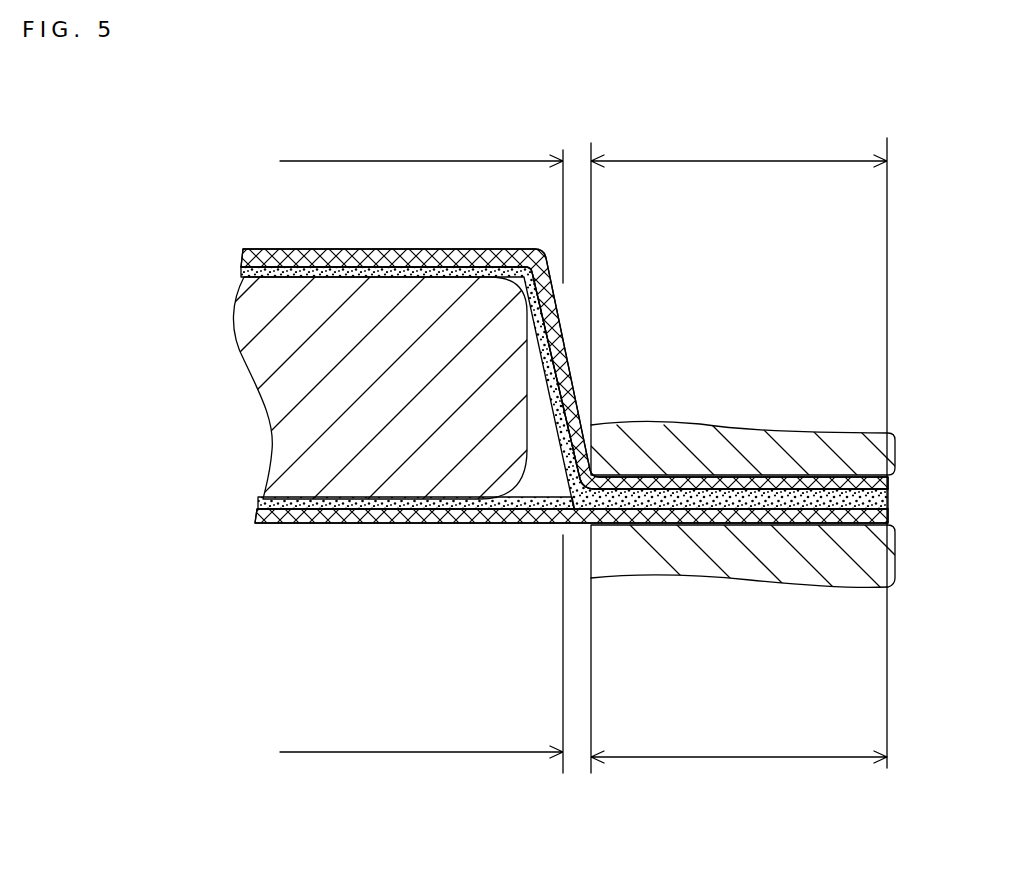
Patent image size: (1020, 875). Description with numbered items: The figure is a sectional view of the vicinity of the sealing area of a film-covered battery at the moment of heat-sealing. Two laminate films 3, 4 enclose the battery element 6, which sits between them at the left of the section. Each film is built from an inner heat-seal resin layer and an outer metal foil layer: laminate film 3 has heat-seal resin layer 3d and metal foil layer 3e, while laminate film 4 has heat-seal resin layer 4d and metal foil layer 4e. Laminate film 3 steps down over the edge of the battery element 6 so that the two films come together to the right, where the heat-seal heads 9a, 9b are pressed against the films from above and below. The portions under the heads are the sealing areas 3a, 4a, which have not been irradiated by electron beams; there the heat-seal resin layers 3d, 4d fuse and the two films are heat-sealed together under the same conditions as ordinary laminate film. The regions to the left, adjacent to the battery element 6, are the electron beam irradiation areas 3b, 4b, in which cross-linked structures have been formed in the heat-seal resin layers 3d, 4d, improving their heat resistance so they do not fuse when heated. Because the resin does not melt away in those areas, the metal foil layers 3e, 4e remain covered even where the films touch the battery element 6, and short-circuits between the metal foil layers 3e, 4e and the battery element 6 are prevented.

The laminate film 3 is at (262, 233).
The sealing area 3a is at (739, 445).
The electron beam irradiation area 3b is at (421, 203).
The heat-seal resin layer 3d is at (238, 273).
The metal foil layer 3e is at (243, 257).
The laminate film 4 is at (320, 538).
The sealing area 4a is at (739, 691).
The electron beam irradiation area 4b is at (421, 666).
The heat-seal resin layer 4d is at (265, 500).
The metal foil layer 4e is at (257, 515).
The battery element 6 is at (288, 383).
The heat-seal head 9a is at (628, 445).
The heat-seal head 9b is at (648, 552).